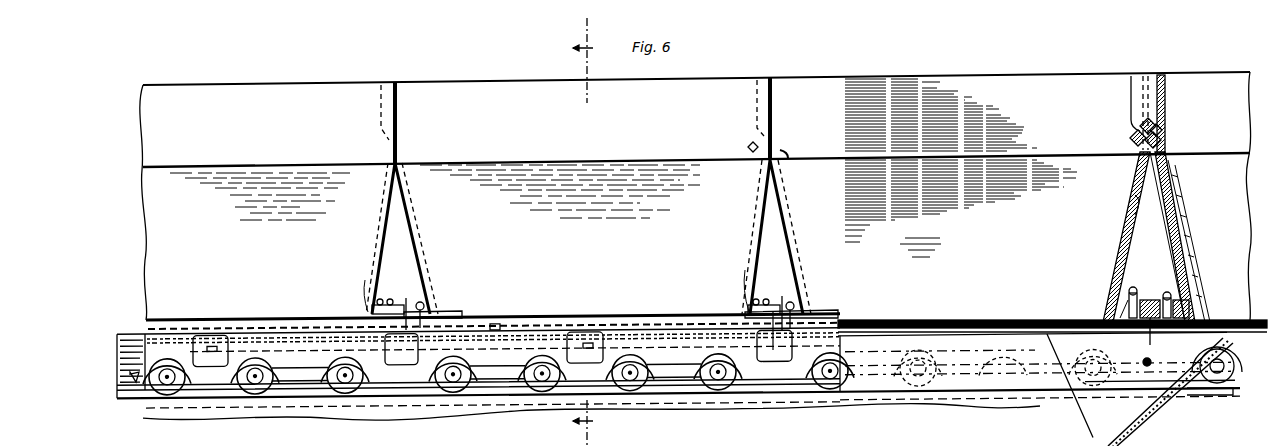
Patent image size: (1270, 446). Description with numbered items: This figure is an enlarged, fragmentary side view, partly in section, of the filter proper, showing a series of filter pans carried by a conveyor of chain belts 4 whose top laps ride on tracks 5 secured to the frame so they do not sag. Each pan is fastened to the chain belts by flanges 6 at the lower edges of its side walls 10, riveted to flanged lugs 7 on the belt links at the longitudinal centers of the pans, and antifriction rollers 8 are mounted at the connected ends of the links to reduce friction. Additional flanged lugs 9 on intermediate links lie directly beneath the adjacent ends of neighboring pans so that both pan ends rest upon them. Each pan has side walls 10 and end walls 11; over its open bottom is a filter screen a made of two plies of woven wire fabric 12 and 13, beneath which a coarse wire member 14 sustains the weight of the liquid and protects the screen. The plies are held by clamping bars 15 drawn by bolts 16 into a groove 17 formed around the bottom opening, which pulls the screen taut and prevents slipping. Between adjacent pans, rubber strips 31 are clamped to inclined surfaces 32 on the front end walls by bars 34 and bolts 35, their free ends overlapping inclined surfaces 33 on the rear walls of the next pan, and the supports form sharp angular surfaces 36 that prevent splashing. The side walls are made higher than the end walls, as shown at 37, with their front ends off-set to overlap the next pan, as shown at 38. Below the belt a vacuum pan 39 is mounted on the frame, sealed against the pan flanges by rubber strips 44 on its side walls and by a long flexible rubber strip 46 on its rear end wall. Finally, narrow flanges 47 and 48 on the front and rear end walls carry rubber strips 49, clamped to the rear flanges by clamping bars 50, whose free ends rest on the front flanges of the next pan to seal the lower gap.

The chain belts 4 is at (307, 384).
The tracks 5 is at (238, 390).
The flanges 6 is at (255, 326).
The flanged lugs 7 is at (216, 348).
The antifriction rollers 8 is at (650, 384).
The flanged lugs 9 is at (780, 356).
The side walls 10 is at (236, 182).
The end walls 11 is at (1149, 198).
The ply of filter fabric 12 is at (160, 331).
The ply of filter fabric 13 is at (278, 331).
The supporting member 14 is at (338, 335).
The clamping bars 15 is at (470, 300).
The bolts 16 is at (382, 298).
The groove 17 is at (1116, 308).
The rubber strips 31 is at (1165, 151).
The inclined surfaces 32 is at (1126, 138).
The inclined surfaces 33 is at (1167, 168).
The bars 34 is at (1160, 130).
The bolts 35 is at (1162, 122).
The sharp angular surfaces 36 is at (755, 135).
The side wall extensions 37 is at (978, 66).
The off-set overlap 38 is at (377, 125).
The vacuum pan 39 is at (1076, 424).
The rubber strips 44 is at (132, 372).
The rubber strip 46 is at (1229, 354).
The front flanges 47 is at (1198, 284).
The rear flanges 48 is at (1103, 285).
The rubber strips 49 is at (405, 298).
The clamping bars 50 is at (784, 248).
The filter screen a is at (543, 326).